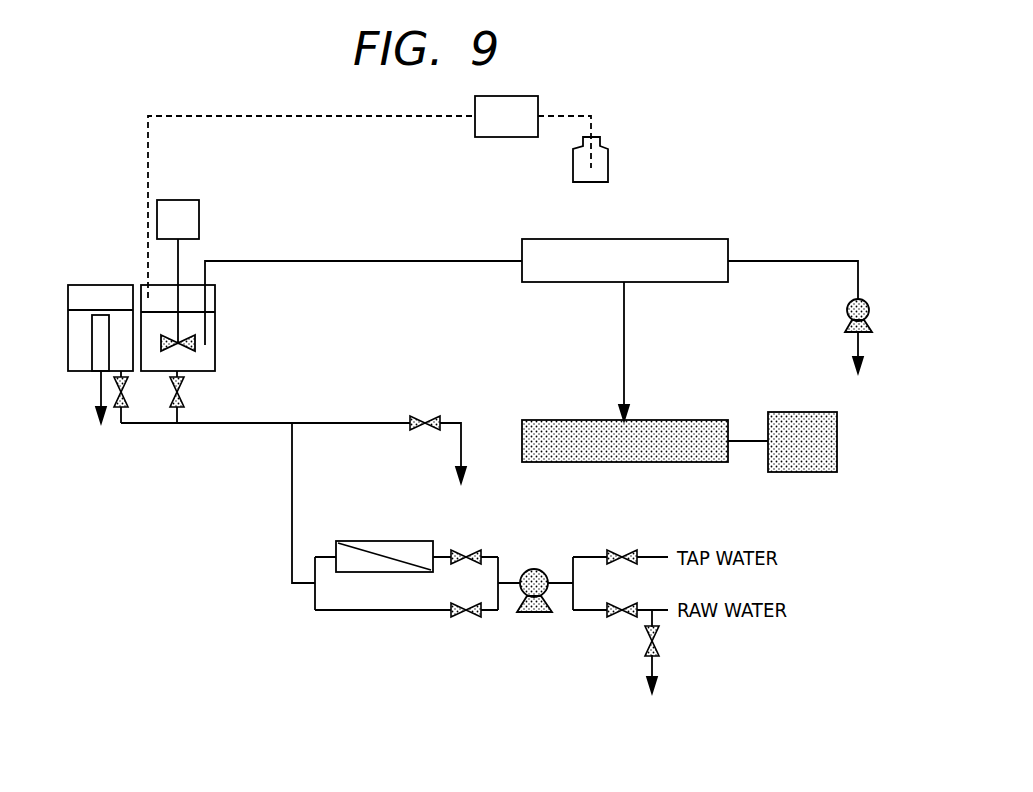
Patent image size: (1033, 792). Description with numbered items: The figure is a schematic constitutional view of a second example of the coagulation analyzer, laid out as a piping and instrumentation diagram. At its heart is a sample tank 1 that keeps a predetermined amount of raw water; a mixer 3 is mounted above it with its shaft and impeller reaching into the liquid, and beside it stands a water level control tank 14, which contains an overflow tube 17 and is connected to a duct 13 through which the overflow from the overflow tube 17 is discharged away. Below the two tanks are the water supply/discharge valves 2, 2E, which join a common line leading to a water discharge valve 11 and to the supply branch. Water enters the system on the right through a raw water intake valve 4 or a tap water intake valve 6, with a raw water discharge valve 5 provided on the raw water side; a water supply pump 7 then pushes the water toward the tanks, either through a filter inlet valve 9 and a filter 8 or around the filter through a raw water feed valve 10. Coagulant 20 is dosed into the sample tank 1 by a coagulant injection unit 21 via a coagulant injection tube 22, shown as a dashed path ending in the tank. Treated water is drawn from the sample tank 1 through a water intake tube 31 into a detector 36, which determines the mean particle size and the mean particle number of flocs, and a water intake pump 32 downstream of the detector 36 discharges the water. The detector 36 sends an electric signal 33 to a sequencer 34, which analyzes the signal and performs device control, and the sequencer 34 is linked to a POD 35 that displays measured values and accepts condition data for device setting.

The sample tank 1 is at (145, 285).
The water supply/discharge valve 2 is at (183, 392).
The water supply/discharge valve 2E is at (127, 392).
The mixer 3 is at (188, 200).
The raw water intake valve 4 is at (618, 617).
The raw water discharge valve 5 is at (657, 640).
The tap water intake valve 6 is at (621, 550).
The water supply pump 7 is at (534, 568).
The filter 8 is at (375, 540).
The filter inlet valve 9 is at (470, 550).
The raw water feed valve 10 is at (463, 615).
The water discharge valve 11 is at (425, 418).
The duct 13 is at (95, 415).
The water level control tank 14 is at (108, 285).
The overflow tube 17 is at (100, 315).
The coagulant 20 is at (610, 160).
The coagulant injection unit 21 is at (506, 116).
The coagulant injection tube 22 is at (218, 115).
The water intake tube 31 is at (409, 258).
The water intake pump 32 is at (845, 312).
The electric signal 33 is at (622, 360).
The sequencer 34 is at (625, 441).
The POD 35 is at (782, 442).
The detector 36 is at (625, 260).